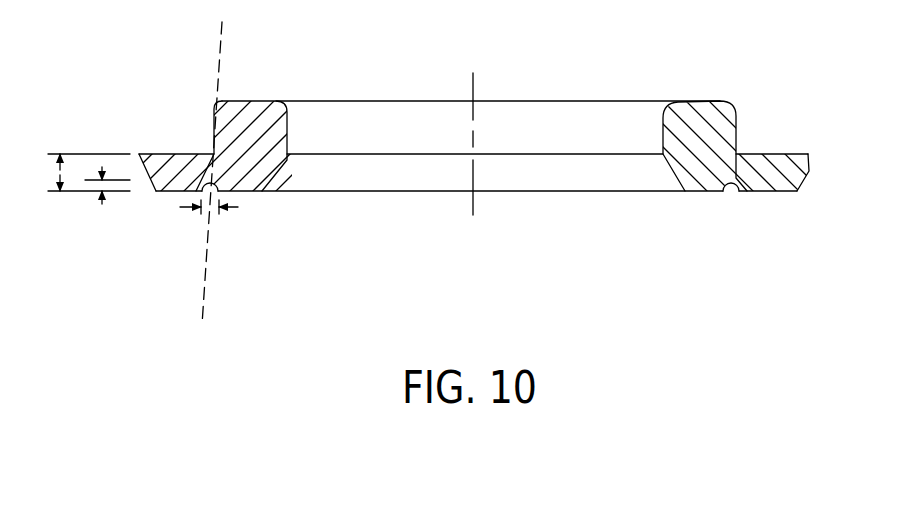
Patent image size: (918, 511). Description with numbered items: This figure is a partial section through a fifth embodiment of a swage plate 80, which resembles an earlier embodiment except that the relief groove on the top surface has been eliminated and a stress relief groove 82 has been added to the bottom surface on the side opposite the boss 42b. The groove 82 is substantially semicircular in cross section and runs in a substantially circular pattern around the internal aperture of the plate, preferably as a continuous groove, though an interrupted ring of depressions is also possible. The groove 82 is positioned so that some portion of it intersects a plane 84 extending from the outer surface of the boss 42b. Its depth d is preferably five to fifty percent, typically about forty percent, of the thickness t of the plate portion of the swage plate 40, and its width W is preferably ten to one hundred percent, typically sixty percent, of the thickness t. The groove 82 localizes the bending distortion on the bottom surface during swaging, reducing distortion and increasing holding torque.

The swage plate 40 is at (783, 153).
The boss 42b is at (736, 113).
The swage plate 80 is at (382, 192).
The stress relief groove 82 is at (233, 189).
The plane 84 is at (222, 33).
The thickness t is at (58, 173).
The depth d is at (110, 183).
The width W is at (216, 213).